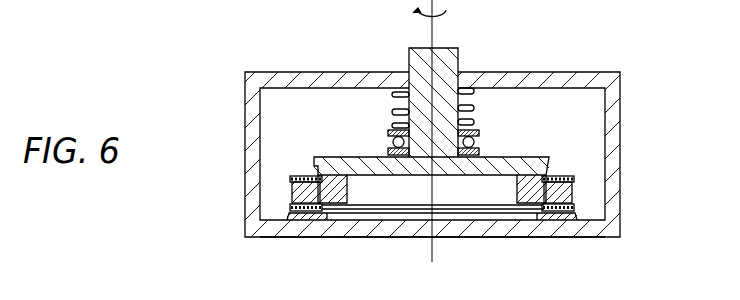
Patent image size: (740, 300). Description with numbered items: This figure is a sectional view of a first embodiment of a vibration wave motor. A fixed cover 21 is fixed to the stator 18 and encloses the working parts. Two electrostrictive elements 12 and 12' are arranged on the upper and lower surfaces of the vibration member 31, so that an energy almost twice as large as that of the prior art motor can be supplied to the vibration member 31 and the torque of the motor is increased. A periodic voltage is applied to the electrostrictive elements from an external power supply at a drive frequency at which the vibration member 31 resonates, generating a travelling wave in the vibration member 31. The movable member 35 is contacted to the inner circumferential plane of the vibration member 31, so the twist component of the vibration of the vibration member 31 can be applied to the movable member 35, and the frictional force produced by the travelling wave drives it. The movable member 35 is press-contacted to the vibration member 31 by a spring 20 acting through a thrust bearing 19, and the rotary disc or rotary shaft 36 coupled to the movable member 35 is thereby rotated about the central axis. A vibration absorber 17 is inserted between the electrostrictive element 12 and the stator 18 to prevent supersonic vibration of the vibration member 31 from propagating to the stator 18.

The fixed cover 21 is at (580, 78).
The rotary disc (rotary shaft) 36 is at (453, 62).
The movable member 35 is at (549, 165).
The vibration member 31 is at (566, 192).
The electrostrictive element 12' is at (388, 161).
The electrostrictive element 12 is at (388, 202).
The vibration absorber 17 is at (578, 218).
The stator 18 is at (544, 232).
The thrust bearing 19 is at (389, 133).
The spring 20 is at (393, 94).